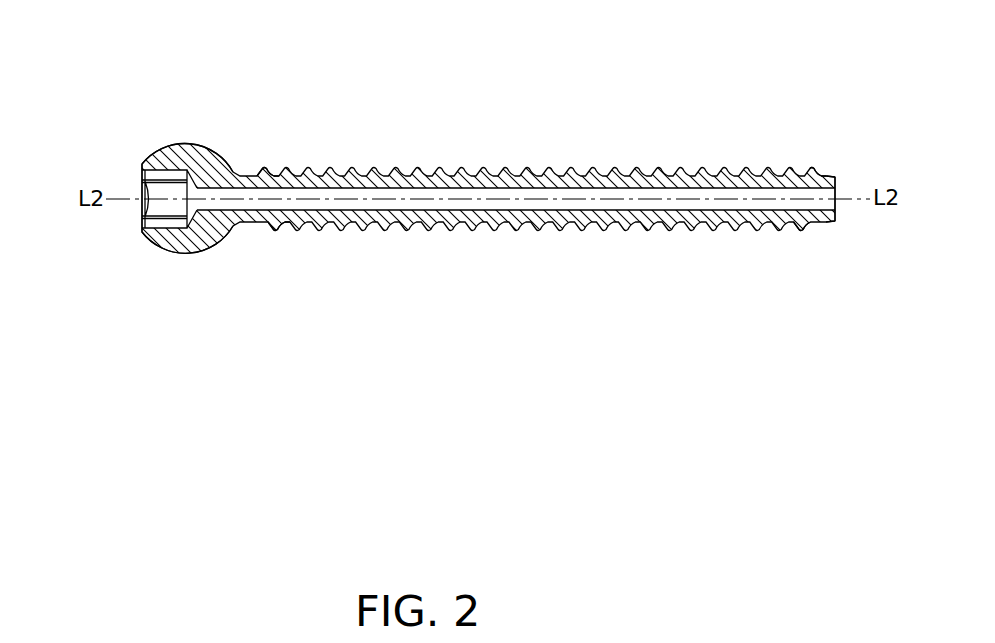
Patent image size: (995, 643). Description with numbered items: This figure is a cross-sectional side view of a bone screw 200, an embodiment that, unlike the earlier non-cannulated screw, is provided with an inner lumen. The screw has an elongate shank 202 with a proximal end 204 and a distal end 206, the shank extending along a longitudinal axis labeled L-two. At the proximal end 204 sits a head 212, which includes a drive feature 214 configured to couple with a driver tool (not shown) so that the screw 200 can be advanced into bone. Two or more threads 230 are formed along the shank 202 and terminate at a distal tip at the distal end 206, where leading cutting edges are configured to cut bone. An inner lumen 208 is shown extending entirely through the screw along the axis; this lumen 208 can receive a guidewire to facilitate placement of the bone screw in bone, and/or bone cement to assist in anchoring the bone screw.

The bone screw 200 is at (187, 122).
The elongate shank 202 is at (455, 242).
The proximal end 204 is at (163, 265).
The distal end 206 is at (823, 240).
The inner lumen 208 is at (418, 195).
The head 212 is at (149, 153).
The drive feature 214 is at (165, 208).
The threads 230 is at (585, 170).